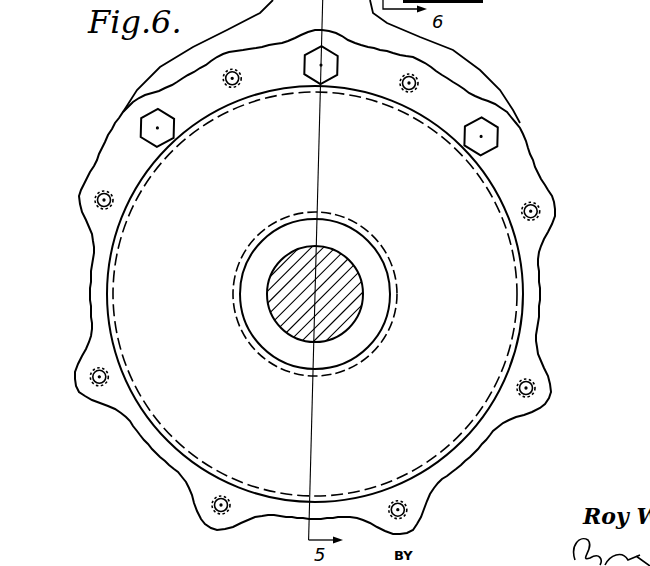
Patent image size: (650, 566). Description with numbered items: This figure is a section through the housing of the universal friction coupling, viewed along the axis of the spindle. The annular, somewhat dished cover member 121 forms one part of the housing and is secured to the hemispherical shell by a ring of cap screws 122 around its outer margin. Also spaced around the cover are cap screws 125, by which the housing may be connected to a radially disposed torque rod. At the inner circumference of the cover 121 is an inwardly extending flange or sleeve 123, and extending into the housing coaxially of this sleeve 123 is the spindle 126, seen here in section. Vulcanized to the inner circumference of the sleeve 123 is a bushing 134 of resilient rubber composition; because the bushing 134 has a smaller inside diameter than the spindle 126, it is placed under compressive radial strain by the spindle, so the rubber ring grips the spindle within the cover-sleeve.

The cover member 121 is at (472, 312).
The cap screws 122 is at (95, 197).
The flange or sleeve 123 is at (337, 214).
The cap screws 125 is at (142, 125).
The spindle 126 is at (305, 335).
The bushing 134 is at (359, 336).